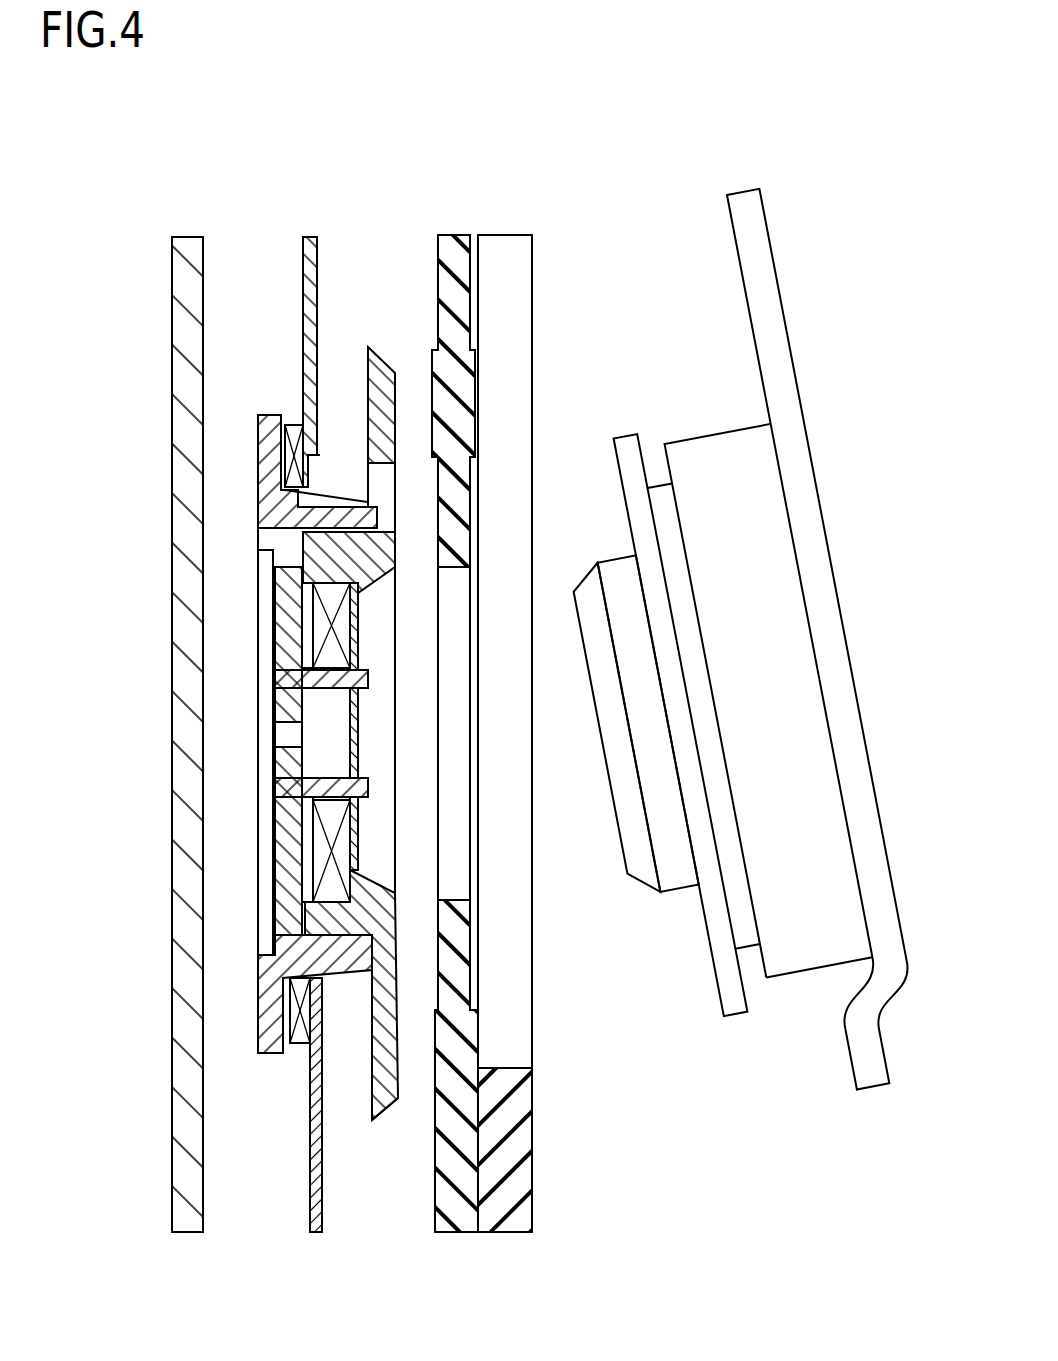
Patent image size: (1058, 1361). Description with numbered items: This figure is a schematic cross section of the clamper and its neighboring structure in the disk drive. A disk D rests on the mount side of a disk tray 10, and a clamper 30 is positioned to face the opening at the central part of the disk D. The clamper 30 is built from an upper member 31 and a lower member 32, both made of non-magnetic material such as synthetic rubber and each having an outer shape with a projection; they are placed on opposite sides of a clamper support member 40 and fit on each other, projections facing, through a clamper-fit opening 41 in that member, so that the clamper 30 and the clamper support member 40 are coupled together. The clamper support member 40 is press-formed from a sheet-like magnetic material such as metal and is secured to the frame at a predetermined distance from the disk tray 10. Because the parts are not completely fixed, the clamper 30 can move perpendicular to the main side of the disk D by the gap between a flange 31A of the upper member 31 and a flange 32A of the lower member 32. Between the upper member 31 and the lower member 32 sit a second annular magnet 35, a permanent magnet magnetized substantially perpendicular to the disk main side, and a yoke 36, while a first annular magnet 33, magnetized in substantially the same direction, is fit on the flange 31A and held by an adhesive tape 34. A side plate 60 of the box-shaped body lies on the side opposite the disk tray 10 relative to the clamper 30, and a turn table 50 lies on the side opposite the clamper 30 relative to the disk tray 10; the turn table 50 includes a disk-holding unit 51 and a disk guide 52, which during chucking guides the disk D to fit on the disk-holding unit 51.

The disk tray 10 is at (497, 1232).
The disk D is at (455, 262).
The clamper 30 is at (272, 662).
The upper member 31 is at (258, 460).
The flange of upper member 31A is at (272, 1010).
The lower member 32 is at (390, 985).
The flange of lower member 32A is at (387, 1100).
The first annular magnet 33 is at (297, 1052).
The adhesive tape 34 is at (292, 1052).
The second annular magnet 35 is at (323, 853).
The yoke 36 is at (312, 817).
The clamper support member 40 is at (313, 255).
The clamper-fit opening 41 is at (320, 468).
The turn table 50 is at (717, 656).
The disk-holding unit 51 is at (648, 723).
The disk guide 52 is at (614, 730).
The side plate 60 is at (187, 262).